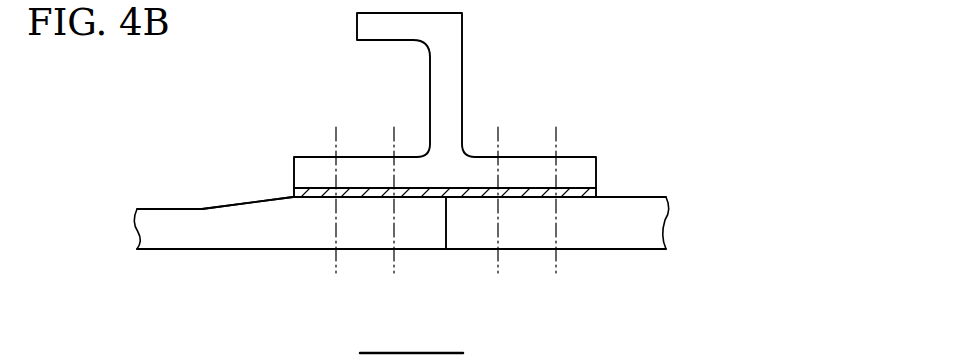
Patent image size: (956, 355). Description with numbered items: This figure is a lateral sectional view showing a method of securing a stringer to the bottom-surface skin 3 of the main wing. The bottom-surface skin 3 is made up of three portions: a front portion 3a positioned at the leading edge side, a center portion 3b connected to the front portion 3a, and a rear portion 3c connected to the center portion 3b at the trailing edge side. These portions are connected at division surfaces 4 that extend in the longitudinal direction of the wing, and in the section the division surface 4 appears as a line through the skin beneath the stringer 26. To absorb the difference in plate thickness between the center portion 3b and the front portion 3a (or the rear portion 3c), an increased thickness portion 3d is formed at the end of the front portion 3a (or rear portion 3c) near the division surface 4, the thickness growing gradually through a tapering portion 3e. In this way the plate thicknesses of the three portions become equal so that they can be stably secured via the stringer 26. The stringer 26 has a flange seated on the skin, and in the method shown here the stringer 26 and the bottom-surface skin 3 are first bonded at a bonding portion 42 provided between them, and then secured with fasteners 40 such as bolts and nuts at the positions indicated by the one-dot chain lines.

The bottom-surface skin 3 is at (217, 250).
The front portion 3a is at (295, 250).
The center portion 3b is at (595, 250).
The rear portion 3c is at (369, 258).
The increased thickness portion 3d is at (407, 249).
The tapering portion 3e is at (237, 205).
The division surface 4 is at (446, 249).
The stringer 26 is at (452, 59).
The fastener 40 is at (393, 131).
The bonding portion 42 is at (600, 193).